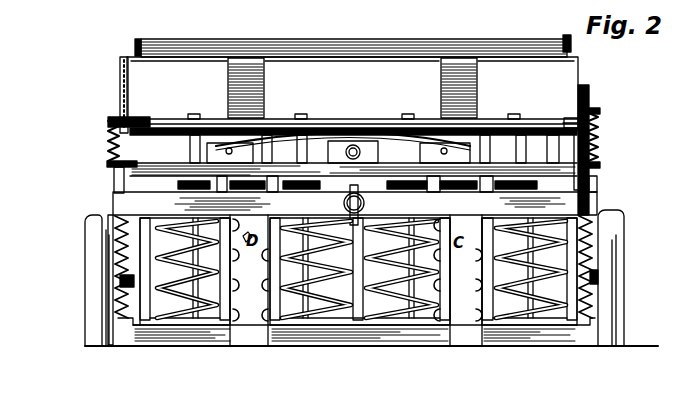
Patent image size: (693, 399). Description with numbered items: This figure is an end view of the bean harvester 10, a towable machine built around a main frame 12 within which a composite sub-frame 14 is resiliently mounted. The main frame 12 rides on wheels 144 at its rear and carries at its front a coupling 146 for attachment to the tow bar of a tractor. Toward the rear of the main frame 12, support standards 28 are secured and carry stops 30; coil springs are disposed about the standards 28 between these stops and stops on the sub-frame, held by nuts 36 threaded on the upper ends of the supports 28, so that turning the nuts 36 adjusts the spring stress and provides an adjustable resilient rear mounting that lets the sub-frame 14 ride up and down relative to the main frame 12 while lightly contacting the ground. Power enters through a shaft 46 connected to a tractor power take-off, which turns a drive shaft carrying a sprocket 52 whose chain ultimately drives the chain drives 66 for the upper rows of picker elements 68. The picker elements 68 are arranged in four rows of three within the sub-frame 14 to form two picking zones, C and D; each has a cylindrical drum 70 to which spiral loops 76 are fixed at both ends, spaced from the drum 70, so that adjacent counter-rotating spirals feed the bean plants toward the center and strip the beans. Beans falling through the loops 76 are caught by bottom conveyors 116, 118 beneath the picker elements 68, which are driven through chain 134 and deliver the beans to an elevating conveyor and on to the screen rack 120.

The bean harvester 10 is at (612, 127).
The main frame 12 is at (122, 198).
The composite sub-frame 14 is at (281, 121).
The support standards 28 is at (590, 182).
The stops 30 is at (598, 162).
The nuts 36 is at (597, 120).
The shaft 46 is at (372, 131).
The sprocket 52 is at (346, 131).
The chain drives 66 is at (396, 186).
The picker elements 68 is at (203, 292).
The cylindrical drum 70 is at (192, 247).
The spiral loops 76 is at (230, 276).
The bottom conveyor 116 is at (224, 0).
The bottom conveyor belts 118 is at (38, 0).
The screen rack 120 is at (453, 50).
The chain 134 is at (270, 0).
The wheels 144 is at (612, 243).
The coupling 146 is at (344, 199).